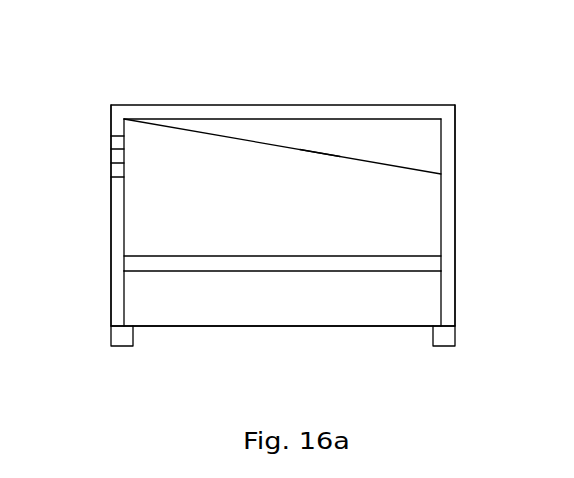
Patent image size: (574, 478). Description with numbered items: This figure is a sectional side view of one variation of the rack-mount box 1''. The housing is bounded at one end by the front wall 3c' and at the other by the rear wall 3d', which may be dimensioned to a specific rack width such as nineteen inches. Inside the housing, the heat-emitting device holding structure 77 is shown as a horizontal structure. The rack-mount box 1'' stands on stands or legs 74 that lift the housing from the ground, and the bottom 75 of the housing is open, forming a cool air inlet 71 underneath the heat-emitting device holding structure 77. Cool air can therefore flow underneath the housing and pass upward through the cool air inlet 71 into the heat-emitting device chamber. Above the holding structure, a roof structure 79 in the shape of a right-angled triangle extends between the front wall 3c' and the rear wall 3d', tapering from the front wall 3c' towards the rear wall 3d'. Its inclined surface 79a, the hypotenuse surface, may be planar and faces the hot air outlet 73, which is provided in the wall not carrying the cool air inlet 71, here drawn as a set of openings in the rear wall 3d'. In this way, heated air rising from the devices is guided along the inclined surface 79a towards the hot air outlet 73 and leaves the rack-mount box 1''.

The rack-mount box 1'' is at (283, 169).
The front wall 3c' is at (482, 215).
The rear wall 3d' is at (82, 215).
The hot air outlet 73 is at (104, 141).
The stands or legs 74 is at (111, 342).
The bottom 75 is at (310, 327).
The heat-emitting device holding structure 77 is at (190, 272).
The cool air inlet 71 is at (363, 283).
The roof structure 79 is at (382, 172).
The inclined surface 79a is at (325, 154).